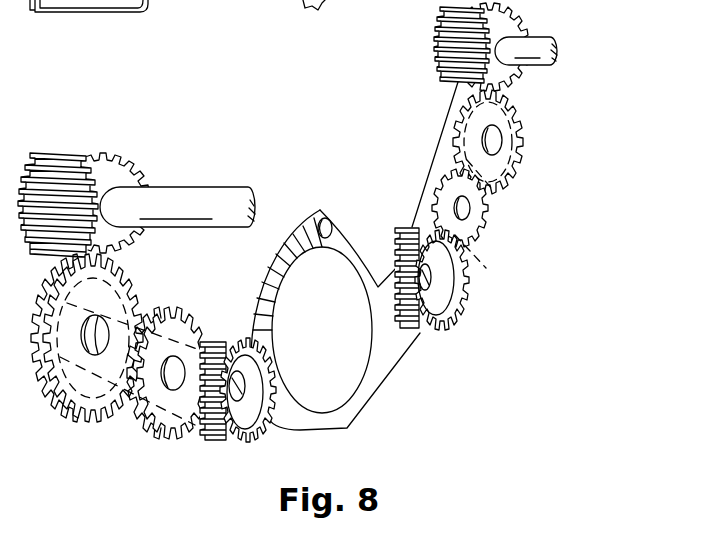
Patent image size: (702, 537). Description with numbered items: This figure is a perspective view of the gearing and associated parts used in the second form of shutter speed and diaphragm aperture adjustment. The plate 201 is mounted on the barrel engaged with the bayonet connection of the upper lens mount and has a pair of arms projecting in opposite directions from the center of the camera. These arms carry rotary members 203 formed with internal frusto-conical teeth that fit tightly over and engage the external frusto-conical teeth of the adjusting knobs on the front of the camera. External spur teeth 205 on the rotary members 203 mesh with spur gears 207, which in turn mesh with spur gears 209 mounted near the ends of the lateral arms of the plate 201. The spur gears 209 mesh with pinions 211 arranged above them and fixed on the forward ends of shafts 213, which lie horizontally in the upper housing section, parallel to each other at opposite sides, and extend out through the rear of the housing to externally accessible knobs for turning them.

The plate 201 is at (383, 374).
The rotary member 203 is at (276, 381).
The external spur teeth 205 is at (221, 345).
The spur gear 207 is at (181, 320).
The spur gear 209 is at (67, 408).
The pinion 211 is at (60, 156).
The shaft 213 is at (188, 195).